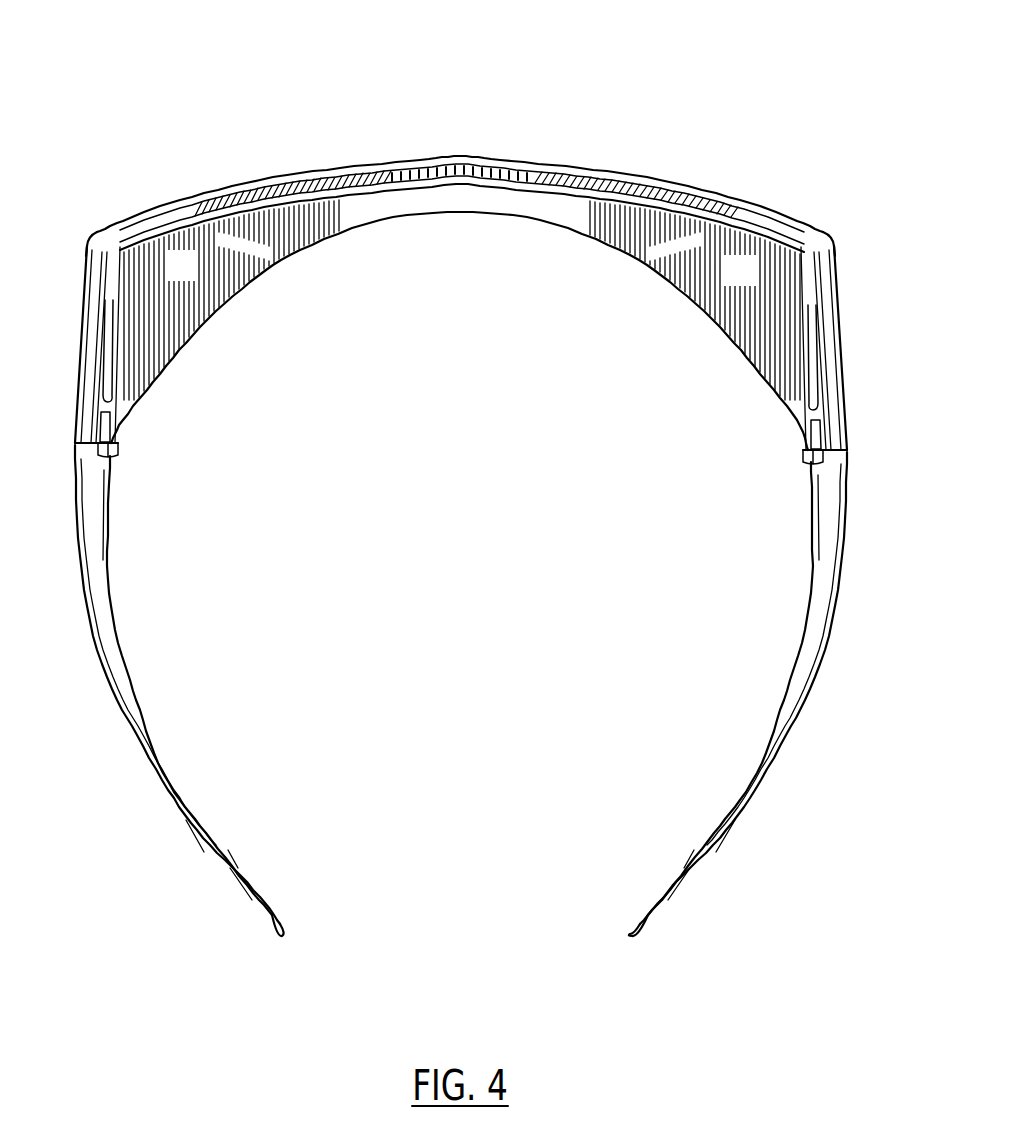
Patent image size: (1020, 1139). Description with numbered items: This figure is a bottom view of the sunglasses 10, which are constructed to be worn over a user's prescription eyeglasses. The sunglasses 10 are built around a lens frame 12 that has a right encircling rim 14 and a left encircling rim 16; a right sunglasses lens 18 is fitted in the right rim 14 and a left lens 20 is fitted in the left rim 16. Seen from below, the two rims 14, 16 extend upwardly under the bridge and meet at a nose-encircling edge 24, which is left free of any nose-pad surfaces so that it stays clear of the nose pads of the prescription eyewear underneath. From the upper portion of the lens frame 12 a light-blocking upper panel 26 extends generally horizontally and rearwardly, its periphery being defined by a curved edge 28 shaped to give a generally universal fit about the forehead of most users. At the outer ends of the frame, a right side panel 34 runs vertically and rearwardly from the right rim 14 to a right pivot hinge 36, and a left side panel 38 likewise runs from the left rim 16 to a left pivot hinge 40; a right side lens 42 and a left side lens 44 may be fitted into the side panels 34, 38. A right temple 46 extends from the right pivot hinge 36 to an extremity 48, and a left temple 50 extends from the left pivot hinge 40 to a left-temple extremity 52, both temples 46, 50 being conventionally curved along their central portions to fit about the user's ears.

The sunglasses 10 is at (703, 72).
The lens frame 12 is at (796, 237).
The right encircling rim 14 is at (178, 222).
The left encircling rim 16 is at (708, 213).
The right sunglasses lens 18 is at (268, 213).
The left lens 20 is at (612, 174).
The nose-encircling edge 24 is at (458, 163).
The light-blocking upper panel 26 is at (193, 279).
The curved edge 28 is at (257, 264).
The right side panel 34 is at (90, 298).
The right pivot hinge 36 is at (116, 449).
The left side panel 38 is at (838, 315).
The left pivot hinge 40 is at (808, 460).
The right side lens 42 is at (112, 248).
The left side lens 44 is at (812, 268).
The right temple 46 is at (143, 767).
The extremity 48 is at (266, 925).
The left temple 50 is at (793, 700).
The left-temple extremity 52 is at (650, 910).